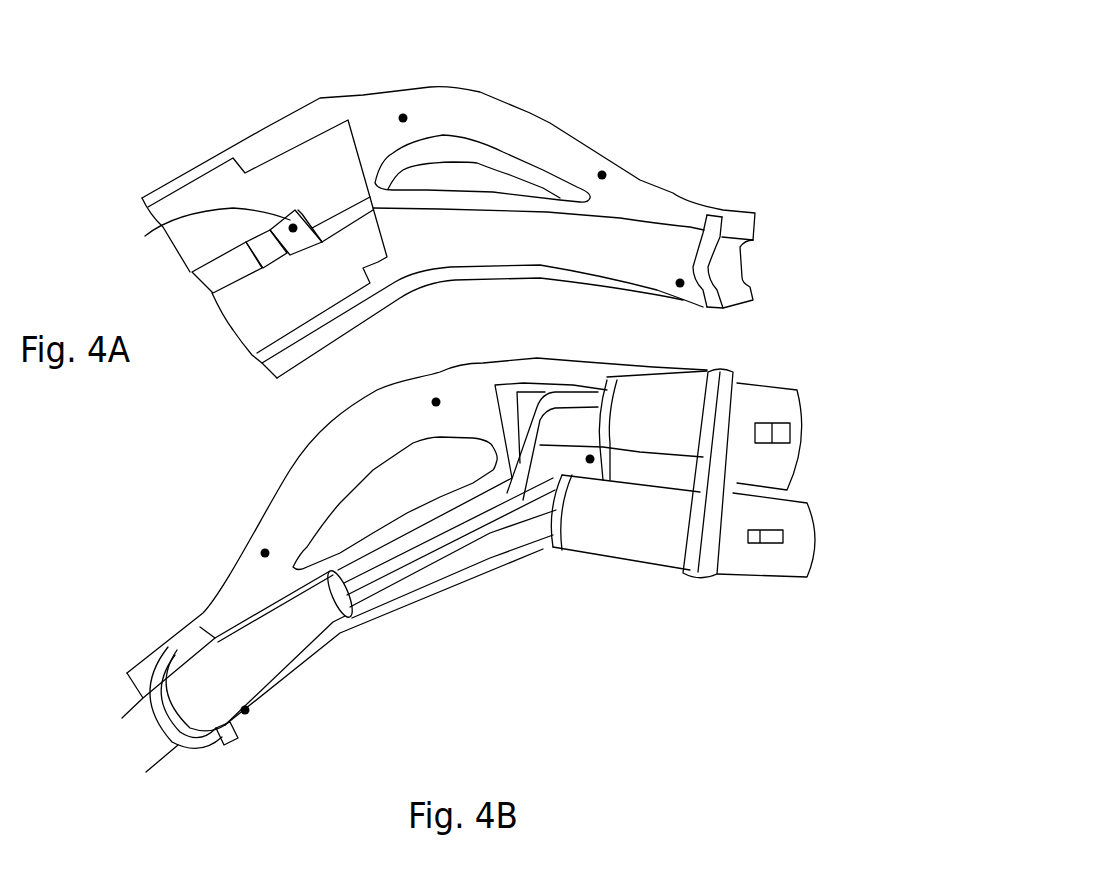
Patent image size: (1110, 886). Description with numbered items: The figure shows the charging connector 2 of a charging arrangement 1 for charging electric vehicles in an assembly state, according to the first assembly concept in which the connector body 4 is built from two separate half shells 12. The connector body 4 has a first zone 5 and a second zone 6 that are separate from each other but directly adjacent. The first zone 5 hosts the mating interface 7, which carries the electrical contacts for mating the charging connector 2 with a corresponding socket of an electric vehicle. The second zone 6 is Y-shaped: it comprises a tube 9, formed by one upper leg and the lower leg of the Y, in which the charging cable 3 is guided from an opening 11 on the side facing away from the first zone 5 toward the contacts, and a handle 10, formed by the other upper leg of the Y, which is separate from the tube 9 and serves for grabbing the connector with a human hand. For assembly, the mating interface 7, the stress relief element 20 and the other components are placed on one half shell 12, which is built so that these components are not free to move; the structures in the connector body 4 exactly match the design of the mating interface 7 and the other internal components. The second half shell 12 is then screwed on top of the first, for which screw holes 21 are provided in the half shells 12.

In FIG. 4B, the charging arrangement 1 is at (555, 664).
In FIG. 4A, the charging connector 2 is at (755, 177).
In FIG. 4B, the charging cable 3 is at (213, 623).
In FIG. 4B, the connector body 4 is at (200, 453).
In FIG. 4A, the first zone 5 is at (247, 142).
In FIG. 4B, the first zone 5 is at (642, 578).
In FIG. 4A, the second zone 6 is at (634, 191).
In FIG. 4B, the second zone 6 is at (353, 635).
In FIG. 4B, the mating interface 7 is at (772, 424).
In FIG. 4A, the tube 9 is at (545, 228).
In FIG. 4B, the tube 9 is at (500, 537).
In FIG. 4A, the handle 10 is at (484, 115).
In FIG. 4B, the opening for cable 11 is at (243, 730).
In FIG. 4A, the half shells 12 is at (383, 110).
In FIG. 4B, the half shells 12 is at (423, 593).
In FIG. 4B, the stress relief element 20 is at (150, 722).
In FIG. 4A, the screw holes 21 is at (403, 118).
In FIG. 4B, the screw holes 21 is at (436, 401).